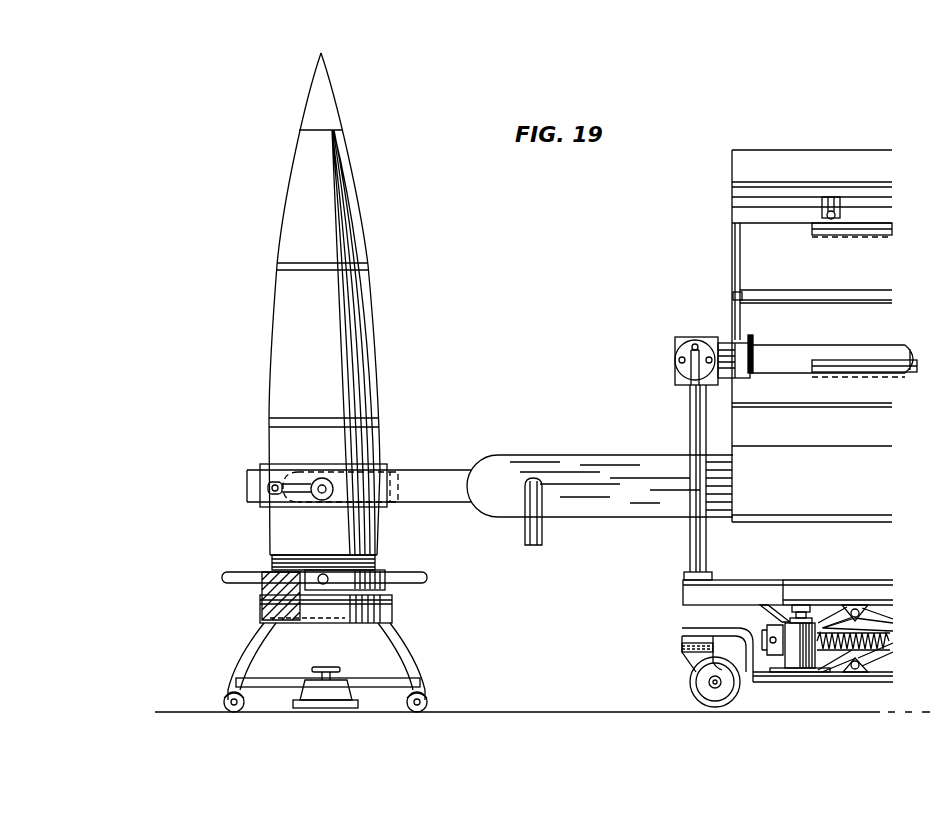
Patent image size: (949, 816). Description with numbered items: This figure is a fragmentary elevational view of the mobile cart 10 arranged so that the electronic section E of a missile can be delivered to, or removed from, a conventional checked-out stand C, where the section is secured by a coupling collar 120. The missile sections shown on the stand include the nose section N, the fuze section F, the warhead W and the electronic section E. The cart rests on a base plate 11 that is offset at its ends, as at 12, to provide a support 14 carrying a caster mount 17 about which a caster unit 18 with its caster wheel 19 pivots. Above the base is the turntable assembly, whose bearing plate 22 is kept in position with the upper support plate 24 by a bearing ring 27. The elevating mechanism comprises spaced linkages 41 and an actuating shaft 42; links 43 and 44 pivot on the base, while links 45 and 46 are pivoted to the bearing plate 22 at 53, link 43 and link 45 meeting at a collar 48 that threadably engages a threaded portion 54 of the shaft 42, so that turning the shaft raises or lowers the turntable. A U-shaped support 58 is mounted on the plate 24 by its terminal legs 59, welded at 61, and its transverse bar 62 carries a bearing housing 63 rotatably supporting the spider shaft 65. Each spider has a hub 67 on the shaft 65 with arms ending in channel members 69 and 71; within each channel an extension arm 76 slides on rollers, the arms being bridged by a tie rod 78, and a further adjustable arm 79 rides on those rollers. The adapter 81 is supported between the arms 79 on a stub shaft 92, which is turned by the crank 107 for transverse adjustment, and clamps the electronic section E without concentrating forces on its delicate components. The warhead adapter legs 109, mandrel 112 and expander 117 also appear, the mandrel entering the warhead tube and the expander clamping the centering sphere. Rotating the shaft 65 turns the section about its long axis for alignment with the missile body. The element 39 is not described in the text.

The nose section N is at (340, 112).
The fuze section F is at (360, 202).
The warhead W is at (377, 343).
The electronic section E is at (382, 540).
The checked-out stand C is at (390, 610).
The coupling collar 120 is at (388, 567).
The adapter 81 is at (245, 461).
The adjustable arm 79 is at (367, 483).
The handle or crank 107 is at (293, 484).
The stub shaft 92 is at (322, 482).
The extension or adjustable arm 76 is at (590, 455).
The tie rod 78 is at (530, 480).
The U-shaped support 58 is at (681, 414).
The terminal legs 59 is at (688, 434).
The weld 61 is at (684, 573).
The transverse bar 62 is at (693, 352).
The bearing or housing 63 is at (672, 348).
The hub 67 is at (750, 337).
The shaft 65 is at (785, 348).
The mobile cart 10 is at (834, 138).
The channel member 71 is at (848, 173).
The channel member 69 is at (848, 487).
The legs 109 is at (863, 238).
The mandrel 112 is at (784, 292).
The expander 117 is at (731, 287).
The support or plate 24 is at (731, 582).
The bearing ring or retaining member 27 is at (792, 597).
The bracket 39 is at (776, 608).
The base plate 11 is at (799, 672).
The collar 48 is at (766, 624).
The pivot 53 is at (857, 608).
The link 45 is at (827, 623).
The bearing plate 22 is at (876, 602).
The linkage 41 is at (901, 605).
The link 46 is at (893, 620).
The threaded portion 54 is at (840, 650).
The actuating shaft 42 is at (878, 655).
The link 44 is at (885, 658).
The link 43 is at (833, 657).
The offset 12 is at (752, 683).
The extension or support 14 is at (682, 630).
The caster mount 17 is at (682, 644).
The caster unit 18 is at (684, 665).
The caster wheel 19 is at (690, 688).